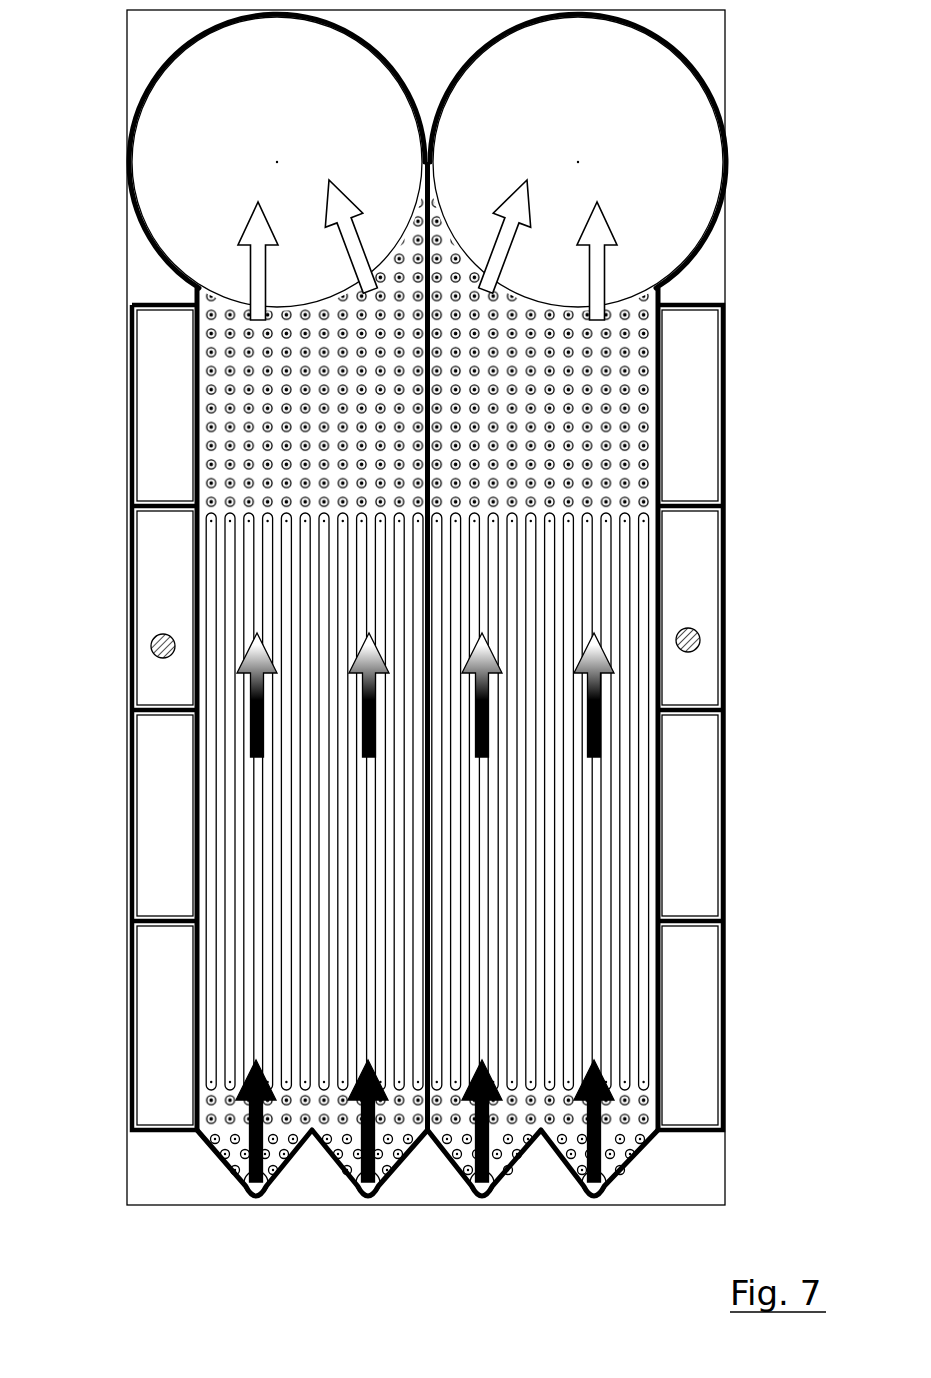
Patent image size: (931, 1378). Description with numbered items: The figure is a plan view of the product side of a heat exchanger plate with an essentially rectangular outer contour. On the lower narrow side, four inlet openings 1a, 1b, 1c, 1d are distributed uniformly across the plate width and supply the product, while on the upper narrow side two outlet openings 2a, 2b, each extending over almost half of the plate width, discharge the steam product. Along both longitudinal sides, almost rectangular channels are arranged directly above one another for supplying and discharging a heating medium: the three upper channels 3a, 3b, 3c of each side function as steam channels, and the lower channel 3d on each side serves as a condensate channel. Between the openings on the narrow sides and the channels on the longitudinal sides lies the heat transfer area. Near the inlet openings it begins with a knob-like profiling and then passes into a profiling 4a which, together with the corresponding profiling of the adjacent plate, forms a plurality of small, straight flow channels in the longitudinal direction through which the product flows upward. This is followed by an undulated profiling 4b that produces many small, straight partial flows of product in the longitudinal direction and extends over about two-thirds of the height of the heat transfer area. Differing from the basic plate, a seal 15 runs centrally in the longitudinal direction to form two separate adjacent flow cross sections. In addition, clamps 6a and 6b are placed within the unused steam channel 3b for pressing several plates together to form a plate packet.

The inlet opening 1a is at (254, 1190).
The inlet opening 1b is at (370, 1190).
The inlet opening 1c is at (483, 1190).
The inlet opening 1d is at (595, 1187).
The outlet opening 2a is at (250, 163).
The outlet opening 2b is at (605, 145).
The steam channel 3a is at (155, 425).
The steam channel 3b is at (155, 600).
The steam channel 3c is at (700, 817).
The condensate channel 3d is at (172, 1020).
The profiling 4a is at (630, 1107).
The undulated profiling 4b is at (590, 977).
The clamp 6a is at (165, 650).
The clamp 6b is at (702, 643).
The seal 15 is at (440, 410).